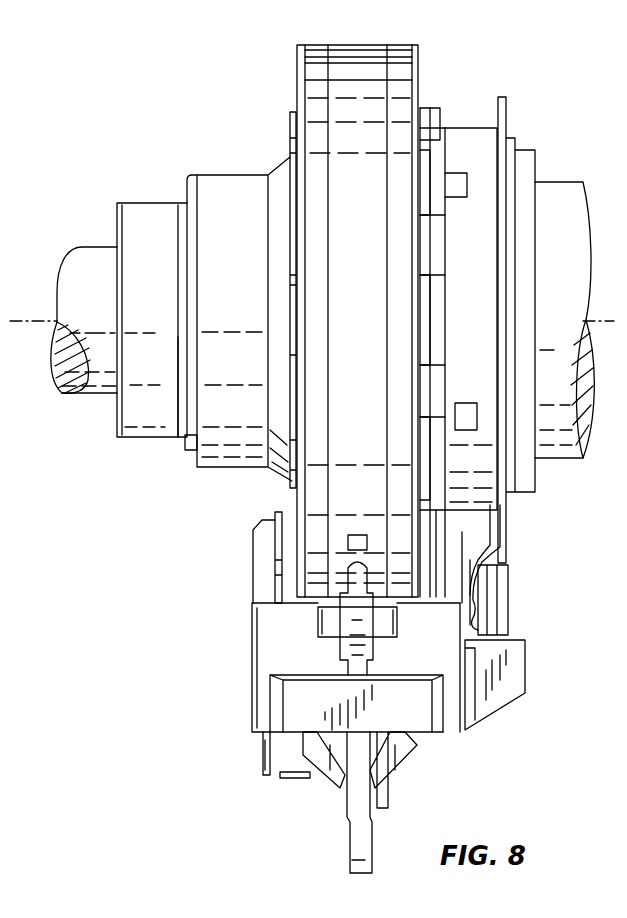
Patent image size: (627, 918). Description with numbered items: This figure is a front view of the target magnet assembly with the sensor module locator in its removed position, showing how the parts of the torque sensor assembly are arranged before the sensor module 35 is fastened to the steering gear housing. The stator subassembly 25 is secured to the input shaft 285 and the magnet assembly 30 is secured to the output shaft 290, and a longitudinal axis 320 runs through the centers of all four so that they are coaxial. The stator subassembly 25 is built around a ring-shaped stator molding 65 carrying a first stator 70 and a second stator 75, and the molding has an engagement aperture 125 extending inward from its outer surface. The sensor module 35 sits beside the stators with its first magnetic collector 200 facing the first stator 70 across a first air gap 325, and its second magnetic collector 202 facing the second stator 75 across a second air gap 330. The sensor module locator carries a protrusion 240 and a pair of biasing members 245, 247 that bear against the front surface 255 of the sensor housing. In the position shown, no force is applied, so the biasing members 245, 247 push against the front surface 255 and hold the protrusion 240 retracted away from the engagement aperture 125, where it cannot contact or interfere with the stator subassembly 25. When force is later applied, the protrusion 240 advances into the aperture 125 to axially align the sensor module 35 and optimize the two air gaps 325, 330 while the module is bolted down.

The stator subassembly 25 is at (474, 115).
The magnet assembly 30 is at (229, 160).
The sensor module 35 is at (404, 698).
The stator molding 65 is at (362, 270).
The first stator 70 is at (290, 545).
The second stator 75 is at (413, 548).
The engagement aperture 125 is at (360, 533).
The first magnetic collector 200 is at (277, 535).
The second magnetic collector 202 is at (437, 542).
The protrusion 240 is at (360, 577).
The biasing member 245 is at (318, 745).
The biasing member 247 is at (400, 750).
The front surface 255 is at (333, 740).
The input shaft 285 is at (555, 195).
The output shaft 290 is at (100, 247).
The longitudinal axis 320 is at (57, 320).
The first air gap 325 is at (282, 515).
The second air gap 330 is at (424, 572).